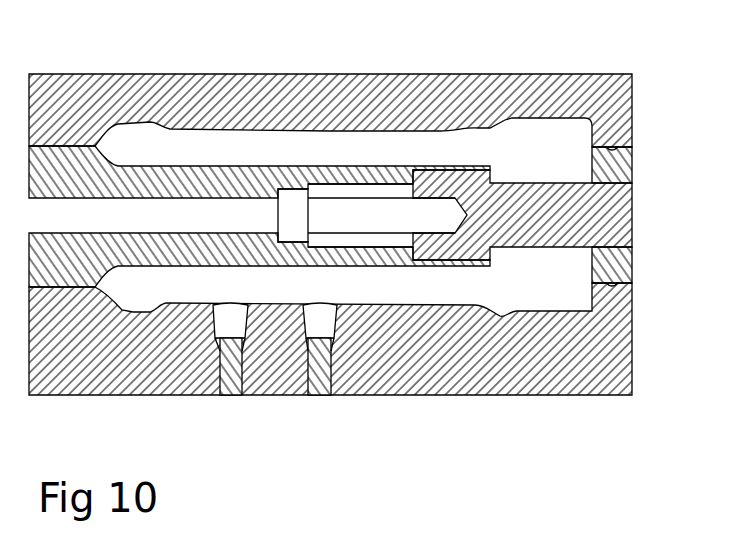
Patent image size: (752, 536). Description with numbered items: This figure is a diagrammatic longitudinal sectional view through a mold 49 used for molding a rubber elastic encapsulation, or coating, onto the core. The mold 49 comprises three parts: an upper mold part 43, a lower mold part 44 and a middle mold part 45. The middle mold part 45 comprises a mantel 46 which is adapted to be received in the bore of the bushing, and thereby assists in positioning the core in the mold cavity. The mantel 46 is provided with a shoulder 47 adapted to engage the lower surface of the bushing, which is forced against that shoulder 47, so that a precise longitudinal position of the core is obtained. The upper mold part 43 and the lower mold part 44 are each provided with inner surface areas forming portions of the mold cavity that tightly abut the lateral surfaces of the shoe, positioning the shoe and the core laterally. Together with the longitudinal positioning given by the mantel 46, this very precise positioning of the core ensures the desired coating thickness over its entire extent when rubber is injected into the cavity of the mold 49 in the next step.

The upper mold part 43 is at (356, 74).
The lower mold part 44 is at (507, 386).
The middle mold part 45 is at (64, 289).
The mantel 46 is at (553, 233).
The shoulder 47 is at (490, 250).
The mold 49 is at (330, 230).